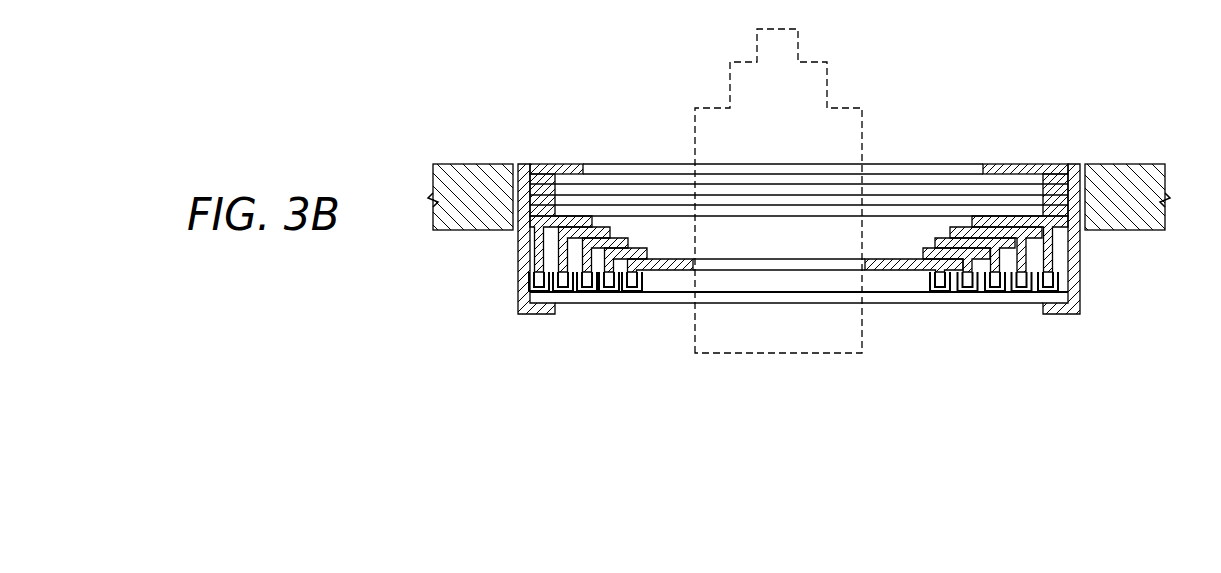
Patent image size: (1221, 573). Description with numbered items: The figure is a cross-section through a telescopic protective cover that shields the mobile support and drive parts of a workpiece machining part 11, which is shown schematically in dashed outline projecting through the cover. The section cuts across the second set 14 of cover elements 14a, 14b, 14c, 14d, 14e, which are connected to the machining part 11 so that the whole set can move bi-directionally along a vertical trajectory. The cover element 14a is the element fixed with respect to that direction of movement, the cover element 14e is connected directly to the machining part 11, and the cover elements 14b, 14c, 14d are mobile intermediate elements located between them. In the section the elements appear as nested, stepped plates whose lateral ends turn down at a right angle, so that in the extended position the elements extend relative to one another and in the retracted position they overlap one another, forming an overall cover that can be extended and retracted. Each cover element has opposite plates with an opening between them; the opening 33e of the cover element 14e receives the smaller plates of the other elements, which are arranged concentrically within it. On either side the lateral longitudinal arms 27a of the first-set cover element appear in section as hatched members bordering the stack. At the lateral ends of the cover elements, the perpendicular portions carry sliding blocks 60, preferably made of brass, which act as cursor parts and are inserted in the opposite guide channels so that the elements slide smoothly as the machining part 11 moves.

The machining part 11 is at (727, 145).
The second set of cover elements 14 is at (586, 182).
The cover element 14a is at (983, 212).
The cover element 14b is at (958, 227).
The cover element 14c is at (948, 238).
The cover element 14d is at (932, 248).
The cover element 14e is at (880, 256).
The lateral longitudinal arm 27a is at (562, 164).
The opening 33e is at (697, 288).
The sliding block 60 is at (530, 286).